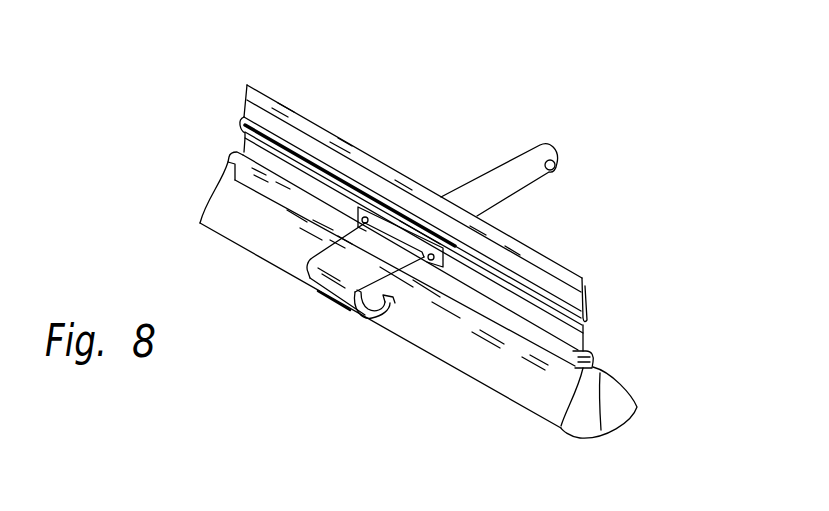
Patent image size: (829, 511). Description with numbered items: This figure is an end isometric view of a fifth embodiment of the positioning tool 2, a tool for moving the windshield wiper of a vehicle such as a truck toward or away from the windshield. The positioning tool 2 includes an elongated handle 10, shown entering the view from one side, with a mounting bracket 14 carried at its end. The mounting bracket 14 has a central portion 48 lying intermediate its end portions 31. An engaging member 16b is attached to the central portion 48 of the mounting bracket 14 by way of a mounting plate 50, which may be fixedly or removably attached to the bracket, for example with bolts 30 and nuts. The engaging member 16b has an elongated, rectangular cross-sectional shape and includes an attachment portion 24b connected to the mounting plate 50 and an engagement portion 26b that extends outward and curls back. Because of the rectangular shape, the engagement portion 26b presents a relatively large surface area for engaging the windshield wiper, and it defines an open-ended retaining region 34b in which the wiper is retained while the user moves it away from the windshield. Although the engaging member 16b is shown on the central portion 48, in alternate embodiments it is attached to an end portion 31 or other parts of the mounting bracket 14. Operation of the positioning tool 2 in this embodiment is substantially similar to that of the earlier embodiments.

The positioning tool 2 is at (376, 85).
The handle 10 is at (503, 165).
The mounting bracket 14 is at (584, 336).
The engaging member 16b is at (316, 308).
The attachment portion 24b is at (382, 235).
The engagement portion 26b is at (308, 259).
The bolts 30 is at (432, 260).
The end portion 31 is at (232, 116).
The retaining region 34b is at (377, 306).
The central portion 48 is at (417, 214).
The mounting plate 50 is at (446, 250).